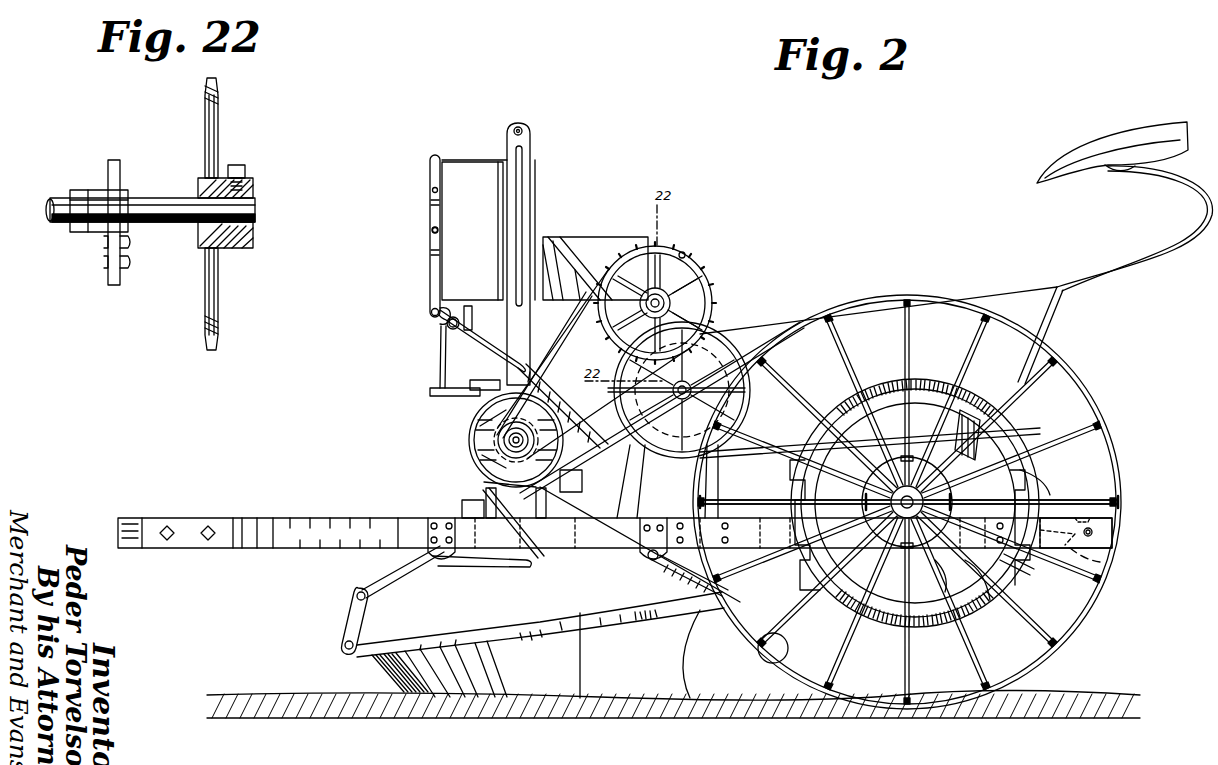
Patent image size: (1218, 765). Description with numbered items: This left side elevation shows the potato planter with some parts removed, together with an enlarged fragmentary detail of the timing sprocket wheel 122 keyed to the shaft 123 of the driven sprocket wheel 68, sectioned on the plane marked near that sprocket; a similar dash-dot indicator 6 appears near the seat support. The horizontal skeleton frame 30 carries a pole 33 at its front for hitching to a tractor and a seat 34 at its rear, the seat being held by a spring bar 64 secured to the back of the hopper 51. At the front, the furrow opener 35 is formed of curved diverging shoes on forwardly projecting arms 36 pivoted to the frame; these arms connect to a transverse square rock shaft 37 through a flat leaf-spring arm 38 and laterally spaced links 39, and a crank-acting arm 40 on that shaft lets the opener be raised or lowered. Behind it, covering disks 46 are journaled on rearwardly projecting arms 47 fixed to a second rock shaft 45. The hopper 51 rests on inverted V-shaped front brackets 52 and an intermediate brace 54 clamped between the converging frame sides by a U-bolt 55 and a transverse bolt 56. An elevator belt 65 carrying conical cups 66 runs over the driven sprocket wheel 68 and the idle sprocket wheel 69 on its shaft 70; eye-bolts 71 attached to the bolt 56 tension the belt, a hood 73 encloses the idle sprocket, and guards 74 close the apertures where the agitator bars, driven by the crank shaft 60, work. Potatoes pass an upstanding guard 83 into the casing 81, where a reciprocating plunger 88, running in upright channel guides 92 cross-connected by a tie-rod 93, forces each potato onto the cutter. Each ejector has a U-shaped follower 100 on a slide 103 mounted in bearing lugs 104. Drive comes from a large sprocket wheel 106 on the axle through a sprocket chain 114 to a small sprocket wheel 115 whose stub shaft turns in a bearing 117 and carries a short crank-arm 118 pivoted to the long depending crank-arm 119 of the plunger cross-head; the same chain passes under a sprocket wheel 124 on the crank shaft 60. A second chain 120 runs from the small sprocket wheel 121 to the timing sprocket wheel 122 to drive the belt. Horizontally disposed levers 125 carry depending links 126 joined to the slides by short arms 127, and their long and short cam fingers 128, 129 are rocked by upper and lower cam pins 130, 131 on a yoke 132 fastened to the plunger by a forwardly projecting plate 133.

In FIG. 2, the seat support post 6 is at (1045, 283).
In FIG. 2, the horizontal skeleton frame 30 is at (327, 518).
In FIG. 2, the pole 33 is at (140, 518).
In FIG. 2, the seat 34 is at (1098, 150).
In FIG. 2, the furrow opener 35 is at (540, 644).
In FIG. 2, the forwardly projecting arms 36 is at (648, 633).
In FIG. 2, the rock shaft 37 is at (444, 562).
In FIG. 2, the spring arm 38 is at (400, 565).
In FIG. 2, the links 39 is at (352, 615).
In FIG. 2, the crank-acting arm 40 is at (500, 563).
In FIG. 2, the rock shaft 45 is at (648, 560).
In FIG. 2, the covering disks 46 is at (735, 654).
In FIG. 2, the rearwardly projecting arms 47 is at (690, 580).
In FIG. 2, the hopper 51 is at (880, 283).
In FIG. 22, the front brackets 52 is at (115, 277).
In FIG. 2, the front brackets 52 is at (712, 488).
In FIG. 2, the intermediate brace 54 is at (1070, 436).
In FIG. 2, the U-bolt 55 is at (1125, 520).
In FIG. 2, the transverse bolt 56 is at (1112, 505).
In FIG. 2, the crank shaft 60 is at (682, 390).
In FIG. 2, the spring bar 64 is at (1203, 197).
In FIG. 2, the elevator belt 65 is at (770, 420).
In FIG. 2, the conical cup 66 is at (840, 420).
In FIG. 2, the driven sprocket wheel 68 is at (684, 253).
In FIG. 2, the idle sprocket wheel 69 is at (978, 600).
In FIG. 2, the shaft 70 is at (938, 582).
In FIG. 2, the eye-bolts 71 is at (1015, 572).
In FIG. 2, the hood 73 is at (1020, 490).
In FIG. 2, the guard 74 is at (1040, 463).
In FIG. 2, the casing 81 is at (470, 306).
In FIG. 2, the guard 83 is at (575, 243).
In FIG. 2, the plunger 88 is at (503, 202).
In FIG. 2, the channel guides 92 is at (532, 137).
In FIG. 2, the tie-rod 93 is at (521, 128).
In FIG. 2, the follower 100 is at (565, 486).
In FIG. 2, the slide 103 is at (470, 486).
In FIG. 2, the bearing lugs 104 is at (430, 391).
In FIG. 2, the sprocket wheel 106 is at (1050, 450).
In FIG. 2, the sprocket chain 114 is at (868, 380).
In FIG. 2, the sprocket wheel 115 is at (478, 427).
In FIG. 2, the bearing 117 is at (532, 555).
In FIG. 2, the crank-arm 118 is at (544, 365).
In FIG. 2, the crank-arm 119 is at (524, 170).
In FIG. 2, the sprocket chain 120 is at (562, 303).
In FIG. 2, the sprocket wheel 121 is at (494, 445).
In FIG. 22, the timing sprocket wheel 122 is at (218, 95).
In FIG. 2, the timing sprocket wheel 122 is at (700, 278).
In FIG. 22, the shaft 123 is at (55, 205).
In FIG. 2, the shaft 123 is at (668, 300).
In FIG. 2, the sprocket wheel 124 is at (730, 332).
In FIG. 2, the levers 125 is at (440, 352).
In FIG. 2, the links 126 is at (440, 374).
In FIG. 2, the arm 127 is at (470, 396).
In FIG. 2, the long cam finger 128 is at (449, 318).
In FIG. 2, the short cam finger 129 is at (447, 328).
In FIG. 2, the upper cam pin 130 is at (431, 230).
In FIG. 2, the lower cam pin 131 is at (430, 313).
In FIG. 2, the yoke 132 is at (430, 191).
In FIG. 2, the plate 133 is at (462, 162).